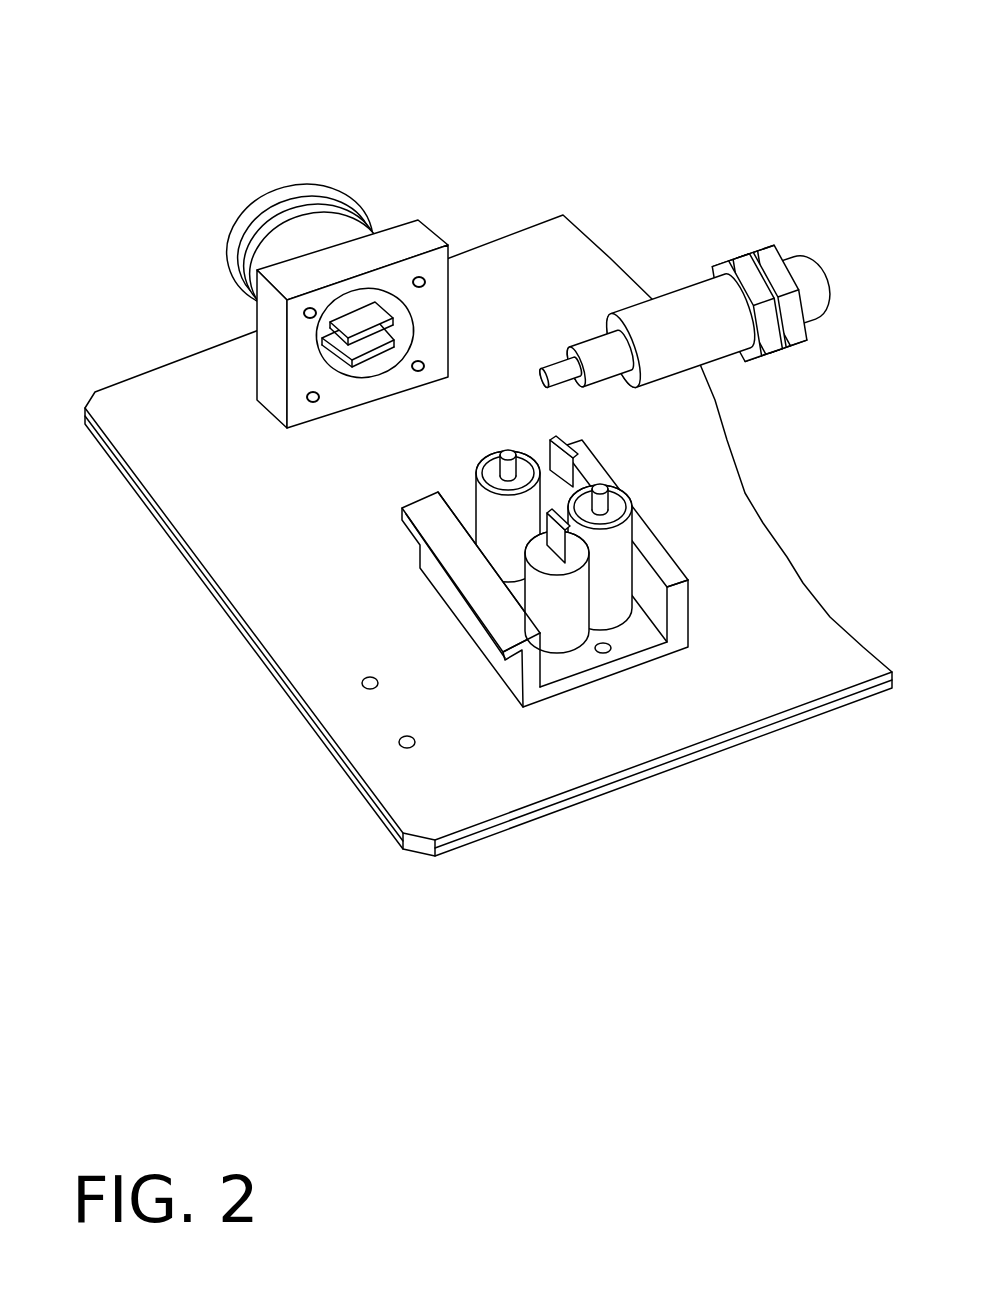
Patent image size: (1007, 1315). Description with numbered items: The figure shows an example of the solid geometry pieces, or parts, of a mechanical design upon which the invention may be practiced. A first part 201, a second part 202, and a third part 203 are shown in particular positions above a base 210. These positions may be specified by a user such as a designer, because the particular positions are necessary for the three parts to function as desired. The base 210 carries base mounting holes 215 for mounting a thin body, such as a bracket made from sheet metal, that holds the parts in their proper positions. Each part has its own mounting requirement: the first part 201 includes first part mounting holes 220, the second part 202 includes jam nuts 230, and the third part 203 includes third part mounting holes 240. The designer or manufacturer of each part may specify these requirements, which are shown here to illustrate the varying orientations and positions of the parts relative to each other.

The first part 201 is at (316, 188).
The second part 202 is at (715, 265).
The third part 203 is at (658, 540).
The base 210 is at (803, 586).
The base mounting holes 215 is at (400, 741).
The first part mounting holes 220 is at (314, 396).
The jam nuts 230 is at (727, 265).
The third part mounting holes 240 is at (603, 655).